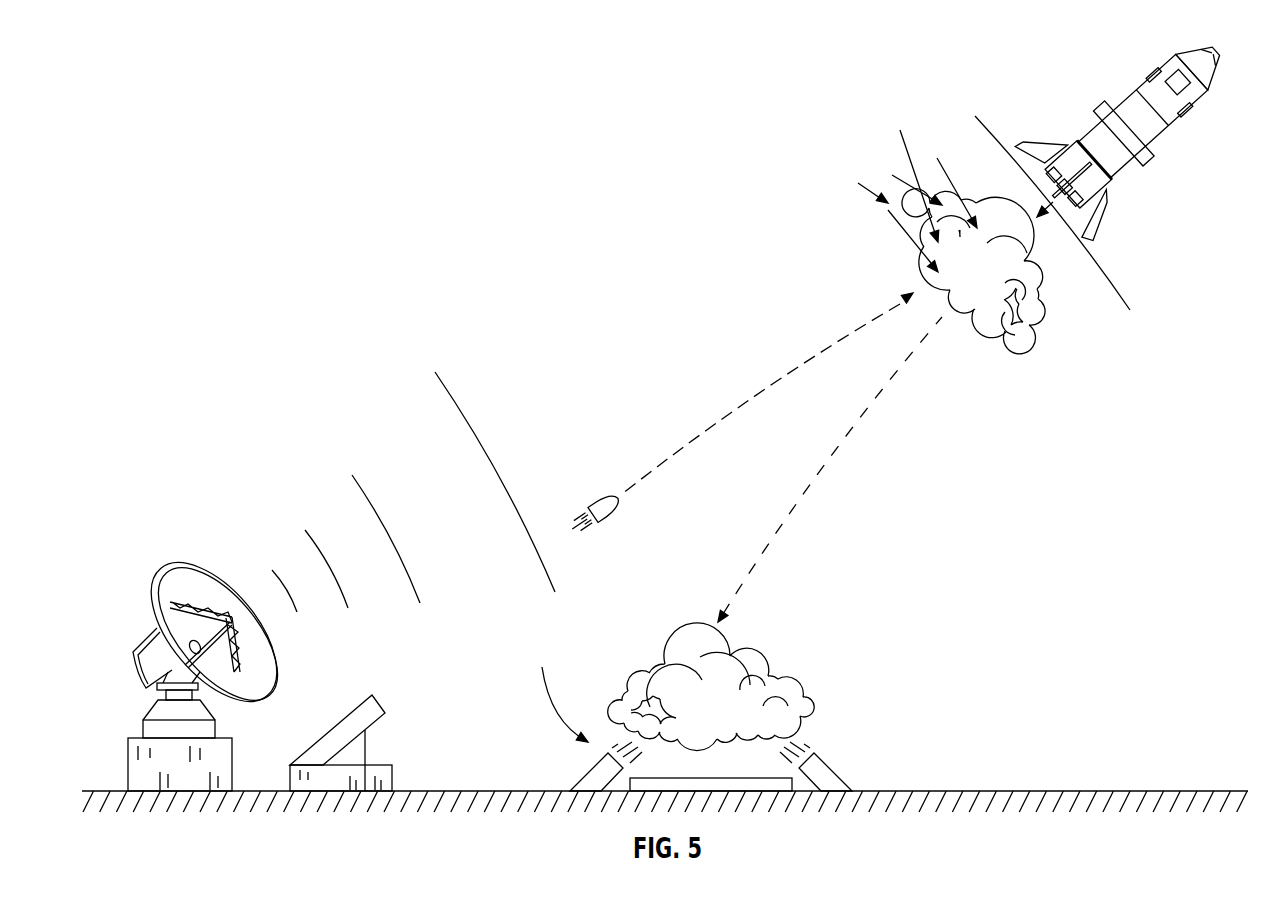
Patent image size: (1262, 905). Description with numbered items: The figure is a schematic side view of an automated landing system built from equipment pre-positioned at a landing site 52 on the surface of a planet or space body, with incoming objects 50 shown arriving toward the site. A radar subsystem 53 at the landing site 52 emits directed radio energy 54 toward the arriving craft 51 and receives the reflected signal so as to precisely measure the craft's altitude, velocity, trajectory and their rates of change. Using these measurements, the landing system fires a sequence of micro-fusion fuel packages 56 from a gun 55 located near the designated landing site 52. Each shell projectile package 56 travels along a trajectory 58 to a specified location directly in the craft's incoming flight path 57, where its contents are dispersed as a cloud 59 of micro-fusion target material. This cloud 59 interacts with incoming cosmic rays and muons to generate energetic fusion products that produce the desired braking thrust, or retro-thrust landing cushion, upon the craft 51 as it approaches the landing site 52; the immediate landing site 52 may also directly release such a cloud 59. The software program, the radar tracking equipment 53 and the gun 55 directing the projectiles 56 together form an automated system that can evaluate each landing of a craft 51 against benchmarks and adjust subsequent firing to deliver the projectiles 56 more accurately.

The incoming threat objects 50 is at (905, 143).
The arriving craft 51 is at (1205, 98).
The landing site 52 is at (540, 695).
The radar subsystem 53 is at (130, 739).
The directed radio energy 54 is at (352, 478).
The gun 55 is at (362, 704).
The micro-fusion fuel package 56 is at (595, 500).
The incoming flight path 57 is at (838, 436).
The trajectory 58 is at (788, 372).
The cloud 59 is at (803, 687).